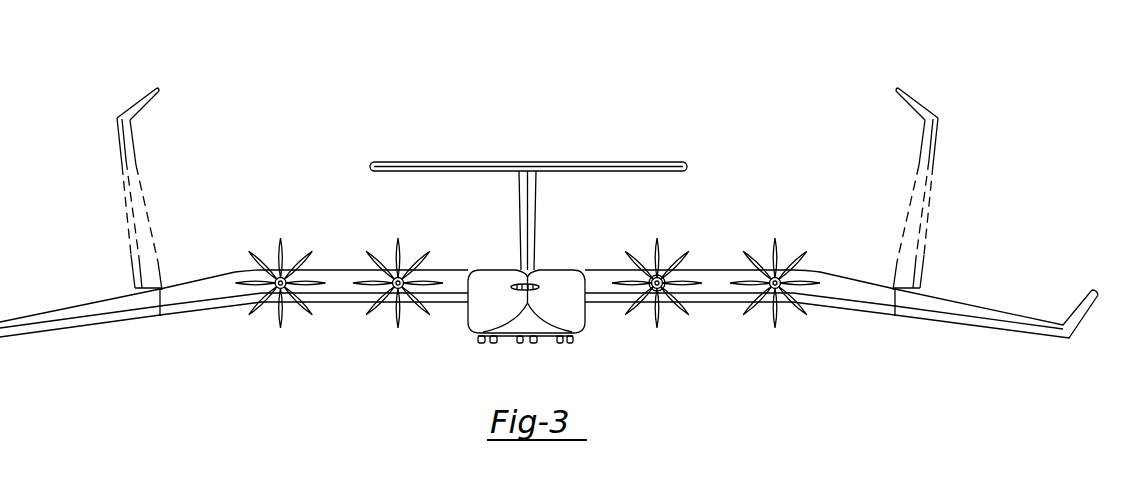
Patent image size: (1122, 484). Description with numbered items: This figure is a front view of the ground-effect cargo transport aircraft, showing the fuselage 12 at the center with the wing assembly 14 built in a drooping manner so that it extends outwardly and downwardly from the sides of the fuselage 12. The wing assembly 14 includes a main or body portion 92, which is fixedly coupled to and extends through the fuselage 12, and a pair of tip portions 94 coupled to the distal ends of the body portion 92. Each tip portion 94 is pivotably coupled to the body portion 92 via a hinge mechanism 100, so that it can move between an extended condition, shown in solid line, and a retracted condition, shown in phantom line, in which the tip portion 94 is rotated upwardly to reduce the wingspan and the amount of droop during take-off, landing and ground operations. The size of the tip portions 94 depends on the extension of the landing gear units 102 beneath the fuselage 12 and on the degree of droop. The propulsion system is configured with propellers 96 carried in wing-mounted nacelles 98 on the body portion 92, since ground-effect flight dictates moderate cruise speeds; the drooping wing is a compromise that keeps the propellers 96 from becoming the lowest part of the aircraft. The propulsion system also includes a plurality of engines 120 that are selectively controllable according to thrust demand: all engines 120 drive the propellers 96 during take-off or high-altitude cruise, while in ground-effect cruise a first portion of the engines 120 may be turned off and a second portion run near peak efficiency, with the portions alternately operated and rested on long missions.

The fuselage 12 is at (569, 294).
The wing assembly 14 is at (549, 266).
The body portion 92 is at (457, 268).
The tip portions 94 is at (53, 311).
The propellers 96 is at (657, 310).
The wing-mounted nacelles 98 is at (716, 273).
The hinge mechanism 100 is at (162, 288).
The landing gear units 102 is at (486, 348).
The engines 120 is at (297, 252).